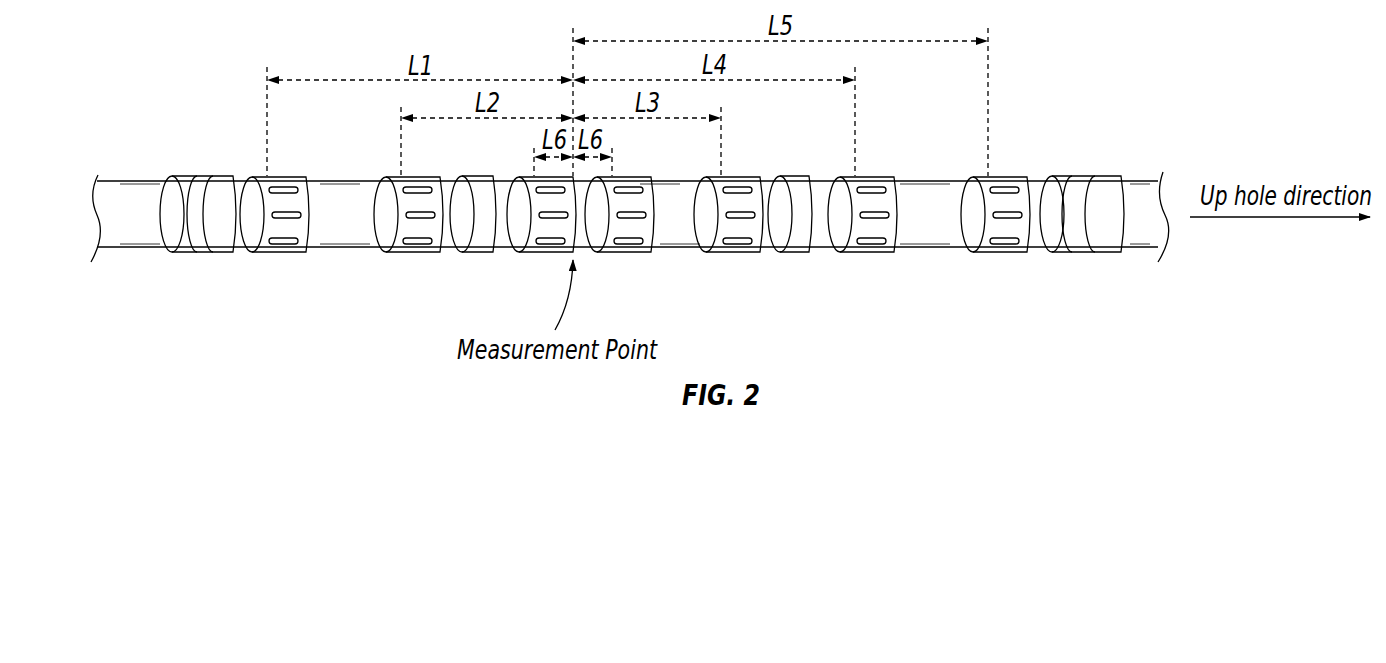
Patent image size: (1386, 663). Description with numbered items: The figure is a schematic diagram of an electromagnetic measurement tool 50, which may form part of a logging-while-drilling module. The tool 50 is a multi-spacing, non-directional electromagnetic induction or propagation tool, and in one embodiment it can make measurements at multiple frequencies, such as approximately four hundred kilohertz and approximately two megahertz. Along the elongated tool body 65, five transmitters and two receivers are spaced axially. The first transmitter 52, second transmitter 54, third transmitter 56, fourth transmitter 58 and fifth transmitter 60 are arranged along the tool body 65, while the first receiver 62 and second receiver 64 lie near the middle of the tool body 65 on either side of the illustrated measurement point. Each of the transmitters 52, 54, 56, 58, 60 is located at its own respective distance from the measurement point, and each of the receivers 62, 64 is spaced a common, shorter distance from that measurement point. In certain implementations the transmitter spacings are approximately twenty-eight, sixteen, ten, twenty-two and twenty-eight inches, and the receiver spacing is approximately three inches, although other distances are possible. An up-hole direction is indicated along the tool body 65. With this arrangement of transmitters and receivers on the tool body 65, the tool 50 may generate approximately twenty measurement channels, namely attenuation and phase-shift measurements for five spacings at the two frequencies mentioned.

The electromagnetic measurement tool 50 is at (1121, 50).
The tool body 65 is at (166, 172).
The transmitter T1 52 is at (274, 248).
The transmitter T2 54 is at (408, 248).
The receiver R1 62 is at (541, 248).
The receiver R2 64 is at (619, 248).
The transmitter T3 56 is at (728, 248).
The transmitter T4 58 is at (862, 248).
The transmitter T5 60 is at (995, 248).